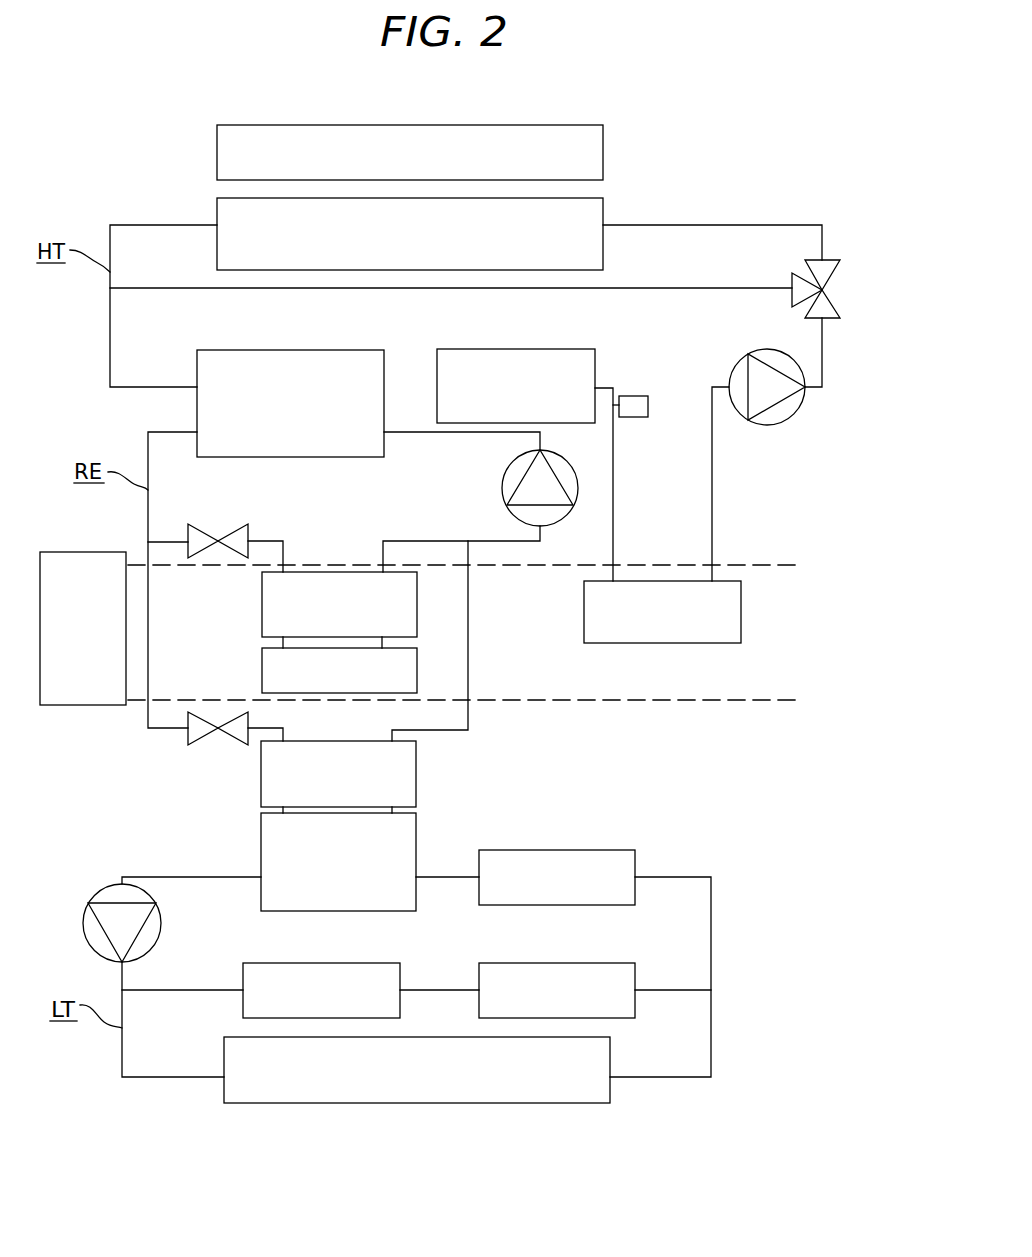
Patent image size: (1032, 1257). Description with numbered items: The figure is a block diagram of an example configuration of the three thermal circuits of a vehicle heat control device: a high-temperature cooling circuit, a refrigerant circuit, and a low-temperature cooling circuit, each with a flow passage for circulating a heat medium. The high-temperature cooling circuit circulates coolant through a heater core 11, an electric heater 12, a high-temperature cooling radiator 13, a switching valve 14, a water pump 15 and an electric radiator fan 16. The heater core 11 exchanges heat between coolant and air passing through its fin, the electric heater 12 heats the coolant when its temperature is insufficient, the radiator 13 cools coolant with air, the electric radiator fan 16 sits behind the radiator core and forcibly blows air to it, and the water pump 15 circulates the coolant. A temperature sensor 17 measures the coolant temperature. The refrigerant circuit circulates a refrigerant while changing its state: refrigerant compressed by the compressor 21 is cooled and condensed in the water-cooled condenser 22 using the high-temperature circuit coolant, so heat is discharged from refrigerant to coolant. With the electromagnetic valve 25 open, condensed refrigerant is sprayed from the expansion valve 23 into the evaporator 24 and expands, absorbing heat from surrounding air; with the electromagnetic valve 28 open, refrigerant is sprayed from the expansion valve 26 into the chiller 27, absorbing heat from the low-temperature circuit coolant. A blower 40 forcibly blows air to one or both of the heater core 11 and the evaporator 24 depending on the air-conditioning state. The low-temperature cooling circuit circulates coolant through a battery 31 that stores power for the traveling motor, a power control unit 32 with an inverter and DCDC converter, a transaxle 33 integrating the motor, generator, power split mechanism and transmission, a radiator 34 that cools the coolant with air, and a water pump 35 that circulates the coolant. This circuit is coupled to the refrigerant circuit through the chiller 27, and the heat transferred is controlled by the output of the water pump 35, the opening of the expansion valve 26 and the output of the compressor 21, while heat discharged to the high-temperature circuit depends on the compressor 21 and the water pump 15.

The heater core 11 is at (742, 612).
The electric heater 12 is at (548, 349).
The high-temperature cooling radiator 13 is at (604, 198).
The switching valve 14 is at (830, 260).
The water pump 15 is at (757, 351).
The electric radiator fan 16 is at (604, 125).
The temperature sensor 17 is at (640, 418).
The compressor 21 is at (575, 476).
The water-cooled condenser 22 is at (338, 350).
The expansion valve 23 is at (340, 572).
The evaporator 24 is at (420, 661).
The electromagnetic valve 25 is at (250, 530).
The expansion valve 26 is at (418, 776).
The chiller 27 is at (418, 848).
The electromagnetic valve 28 is at (188, 735).
The battery 31 is at (618, 850).
The power control unit 32 is at (402, 963).
The transaxle 33 is at (636, 963).
The radiator 34 is at (598, 1103).
The water pump 35 is at (98, 893).
The blower 40 is at (52, 552).